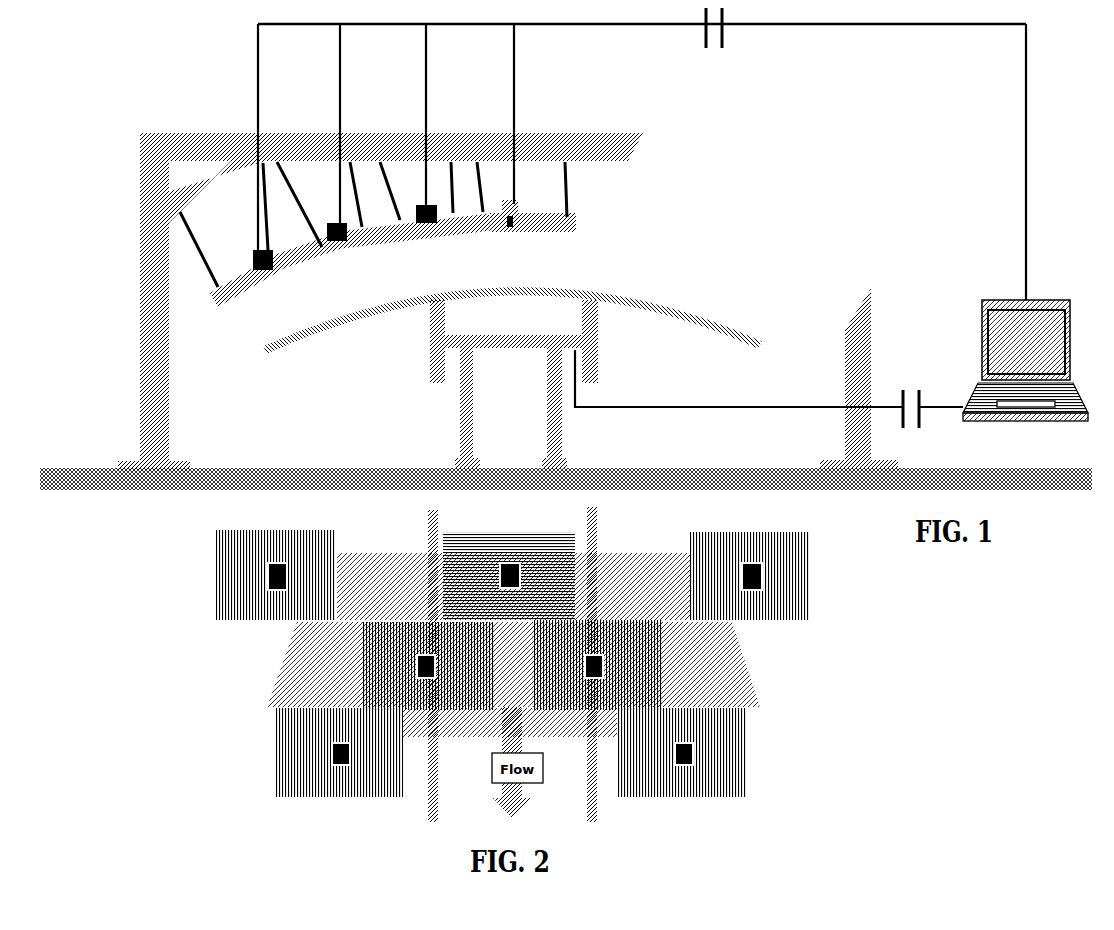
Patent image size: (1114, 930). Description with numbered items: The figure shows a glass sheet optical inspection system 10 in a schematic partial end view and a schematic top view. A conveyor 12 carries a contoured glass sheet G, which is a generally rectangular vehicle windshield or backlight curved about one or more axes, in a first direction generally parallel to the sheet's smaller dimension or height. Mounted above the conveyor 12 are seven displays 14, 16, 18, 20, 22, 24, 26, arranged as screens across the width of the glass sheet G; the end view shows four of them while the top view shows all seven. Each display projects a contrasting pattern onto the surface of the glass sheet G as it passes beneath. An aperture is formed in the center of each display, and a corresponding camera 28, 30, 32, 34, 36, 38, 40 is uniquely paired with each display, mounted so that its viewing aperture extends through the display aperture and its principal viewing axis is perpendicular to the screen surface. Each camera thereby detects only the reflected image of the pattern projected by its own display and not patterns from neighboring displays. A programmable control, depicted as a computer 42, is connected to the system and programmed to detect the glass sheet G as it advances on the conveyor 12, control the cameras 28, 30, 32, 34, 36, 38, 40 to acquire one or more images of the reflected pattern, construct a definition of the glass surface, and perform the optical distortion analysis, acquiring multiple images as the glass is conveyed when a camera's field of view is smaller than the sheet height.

In FIG. 1, the glass sheet optical inspection system 10 is at (166, 98).
In FIG. 1, the conveyor 12 is at (594, 338).
In FIG. 2, the conveyor 12 is at (598, 525).
In FIG. 1, the display 14 is at (552, 226).
In FIG. 2, the display 14 is at (488, 540).
In FIG. 1, the display 16 is at (453, 230).
In FIG. 2, the display 16 is at (375, 673).
In FIG. 1, the display 18 is at (326, 252).
In FIG. 2, the display 18 is at (293, 738).
In FIG. 1, the display 20 is at (246, 293).
In FIG. 2, the display 20 is at (222, 565).
In FIG. 2, the display 22 is at (665, 648).
In FIG. 2, the display 24 is at (720, 730).
In FIG. 2, the display 26 is at (790, 548).
In FIG. 1, the camera 28 is at (514, 207).
In FIG. 2, the camera 28 is at (500, 578).
In FIG. 1, the camera 30 is at (427, 204).
In FIG. 2, the camera 30 is at (415, 665).
In FIG. 1, the camera 32 is at (335, 225).
In FIG. 2, the camera 32 is at (340, 766).
In FIG. 1, the camera 34 is at (254, 258).
In FIG. 2, the camera 34 is at (268, 578).
In FIG. 2, the camera 36 is at (603, 667).
In FIG. 2, the camera 38 is at (684, 766).
In FIG. 2, the camera 40 is at (762, 575).
In FIG. 1, the computer 42 is at (982, 388).
In FIG. 1, the glass sheet G is at (737, 330).